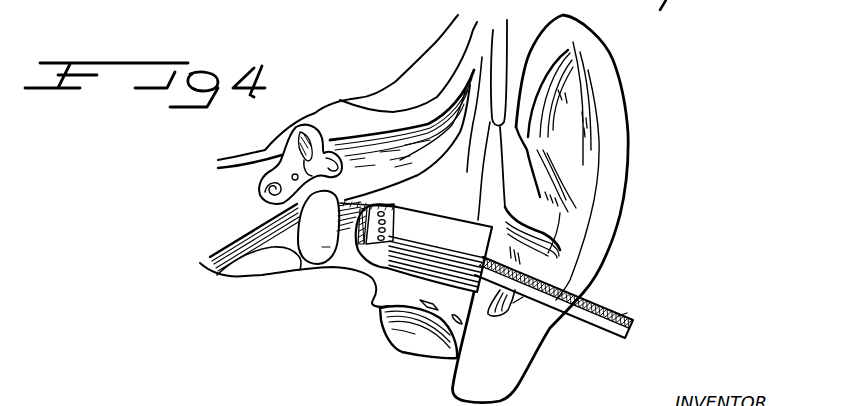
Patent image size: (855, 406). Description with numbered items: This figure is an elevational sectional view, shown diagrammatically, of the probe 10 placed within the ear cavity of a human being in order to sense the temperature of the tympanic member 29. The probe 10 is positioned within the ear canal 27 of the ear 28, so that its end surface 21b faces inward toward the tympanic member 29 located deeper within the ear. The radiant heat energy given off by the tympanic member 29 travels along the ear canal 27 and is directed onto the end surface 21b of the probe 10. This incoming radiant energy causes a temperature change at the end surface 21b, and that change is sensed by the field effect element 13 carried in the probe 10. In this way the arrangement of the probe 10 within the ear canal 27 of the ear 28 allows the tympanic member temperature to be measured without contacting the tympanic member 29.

The probe 10 is at (487, 254).
The field effect element 13 is at (409, 198).
The end surface 21b is at (364, 203).
The ear canal 27 is at (326, 249).
The ear 28 is at (624, 104).
The tympanic member 29 is at (304, 250).